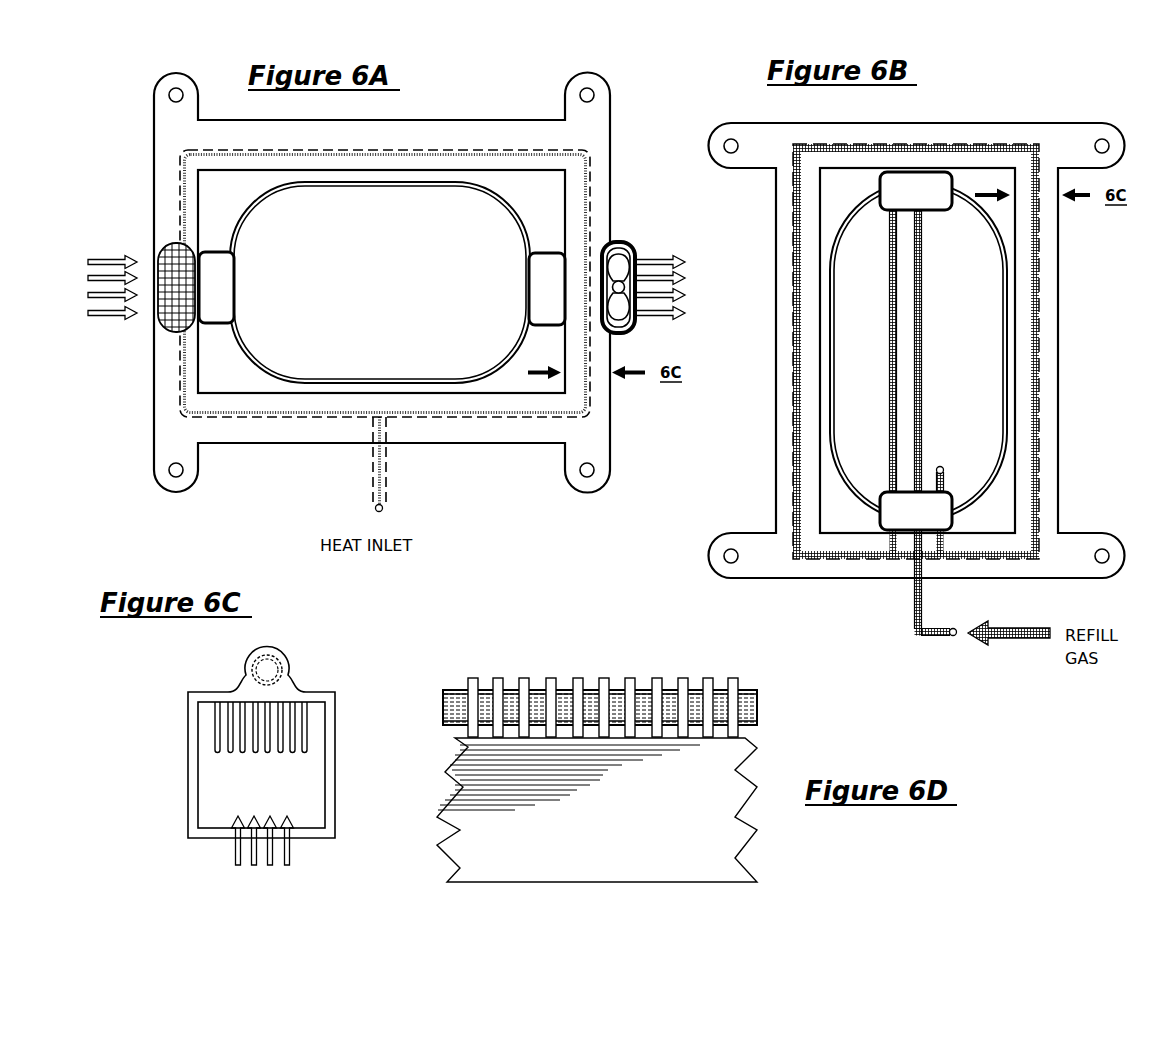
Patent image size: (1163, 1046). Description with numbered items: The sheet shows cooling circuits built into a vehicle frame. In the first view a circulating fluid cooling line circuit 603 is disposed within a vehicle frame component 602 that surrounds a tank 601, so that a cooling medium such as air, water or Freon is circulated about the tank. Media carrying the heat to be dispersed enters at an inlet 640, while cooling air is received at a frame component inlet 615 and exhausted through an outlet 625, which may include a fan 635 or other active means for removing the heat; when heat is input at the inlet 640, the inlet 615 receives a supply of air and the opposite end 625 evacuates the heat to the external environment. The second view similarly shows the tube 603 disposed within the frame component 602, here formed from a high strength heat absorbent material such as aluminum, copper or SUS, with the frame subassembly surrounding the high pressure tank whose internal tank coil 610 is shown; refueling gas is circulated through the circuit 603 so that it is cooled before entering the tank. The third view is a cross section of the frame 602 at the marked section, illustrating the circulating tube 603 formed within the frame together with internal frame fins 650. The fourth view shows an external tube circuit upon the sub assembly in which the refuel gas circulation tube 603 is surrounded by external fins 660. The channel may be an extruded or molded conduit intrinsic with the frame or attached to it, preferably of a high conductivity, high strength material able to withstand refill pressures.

In FIG. 6A, the tank 601 is at (383, 378).
In FIG. 6A, the vehicle frame component 602 is at (492, 120).
In FIG. 6B, the vehicle frame component 602 is at (1060, 123).
In FIG. 6C, the vehicle frame component 602 is at (190, 787).
In FIG. 6D, the vehicle frame component 602 is at (748, 772).
In FIG. 6A, the circulating fluid cooling line circuit 603 is at (478, 420).
In FIG. 6B, the circulating fluid cooling line circuit 603 is at (845, 556).
In FIG. 6C, the circulating fluid cooling line circuit 603 is at (267, 670).
In FIG. 6D, the circulating fluid cooling line circuit 603 is at (757, 715).
In FIG. 6B, the internal tank coil 610 is at (925, 398).
In FIG. 6A, the frame component inlet 615 is at (102, 290).
In FIG. 6C, the frame component inlet 615 is at (263, 859).
In FIG. 6A, the outlet 625 is at (685, 288).
In FIG. 6A, the fan 635 is at (628, 246).
In FIG. 6A, the inlet 640 is at (370, 485).
In FIG. 6C, the internal frame fins 650 is at (267, 752).
In FIG. 6D, the external fins 660 is at (551, 678).